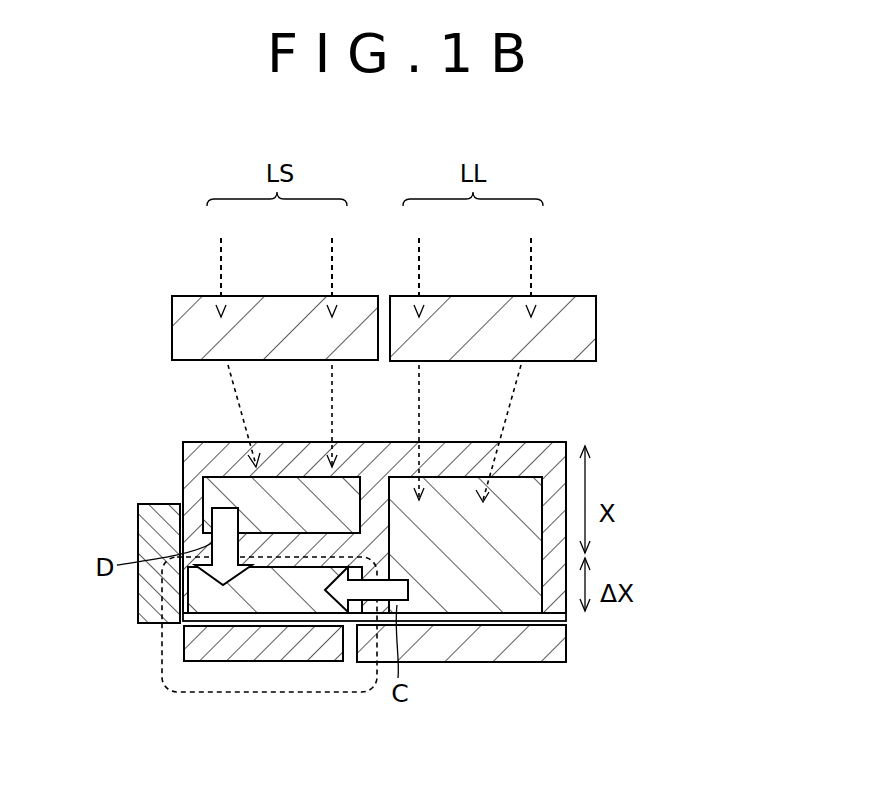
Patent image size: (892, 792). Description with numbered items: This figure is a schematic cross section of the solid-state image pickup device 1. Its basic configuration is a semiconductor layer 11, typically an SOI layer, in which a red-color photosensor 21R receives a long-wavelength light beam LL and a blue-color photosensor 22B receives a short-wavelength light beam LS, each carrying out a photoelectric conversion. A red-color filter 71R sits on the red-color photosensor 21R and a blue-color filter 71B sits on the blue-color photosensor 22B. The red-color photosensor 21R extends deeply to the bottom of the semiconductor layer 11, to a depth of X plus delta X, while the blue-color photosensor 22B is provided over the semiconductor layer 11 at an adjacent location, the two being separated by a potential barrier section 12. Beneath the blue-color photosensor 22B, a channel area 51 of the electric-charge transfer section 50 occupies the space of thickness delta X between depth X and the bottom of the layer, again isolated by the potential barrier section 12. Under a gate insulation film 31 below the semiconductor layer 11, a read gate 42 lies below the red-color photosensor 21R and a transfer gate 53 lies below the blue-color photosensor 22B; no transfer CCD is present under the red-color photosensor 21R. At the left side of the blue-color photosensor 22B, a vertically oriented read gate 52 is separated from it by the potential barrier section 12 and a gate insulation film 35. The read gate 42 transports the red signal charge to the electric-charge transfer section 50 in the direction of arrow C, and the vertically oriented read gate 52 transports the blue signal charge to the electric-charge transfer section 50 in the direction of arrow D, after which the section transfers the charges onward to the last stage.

The solid-state image pickup device 1 is at (600, 233).
The semiconductor layer 11 is at (515, 442).
The potential barrier section 12 is at (567, 442).
The red-color photosensor 21R is at (530, 490).
The blue-color photosensor 22B is at (218, 480).
The gate insulation film 31 is at (207, 618).
The gate insulation film 35 is at (188, 505).
The read gate 42 is at (452, 660).
The electric-charge transfer section 50 is at (162, 683).
The channel area 51 is at (313, 603).
The vertically oriented read gate 52 is at (145, 540).
The transfer gate 53 is at (253, 650).
The blue-color filter 71B is at (178, 323).
The red-color filter 71R is at (596, 325).